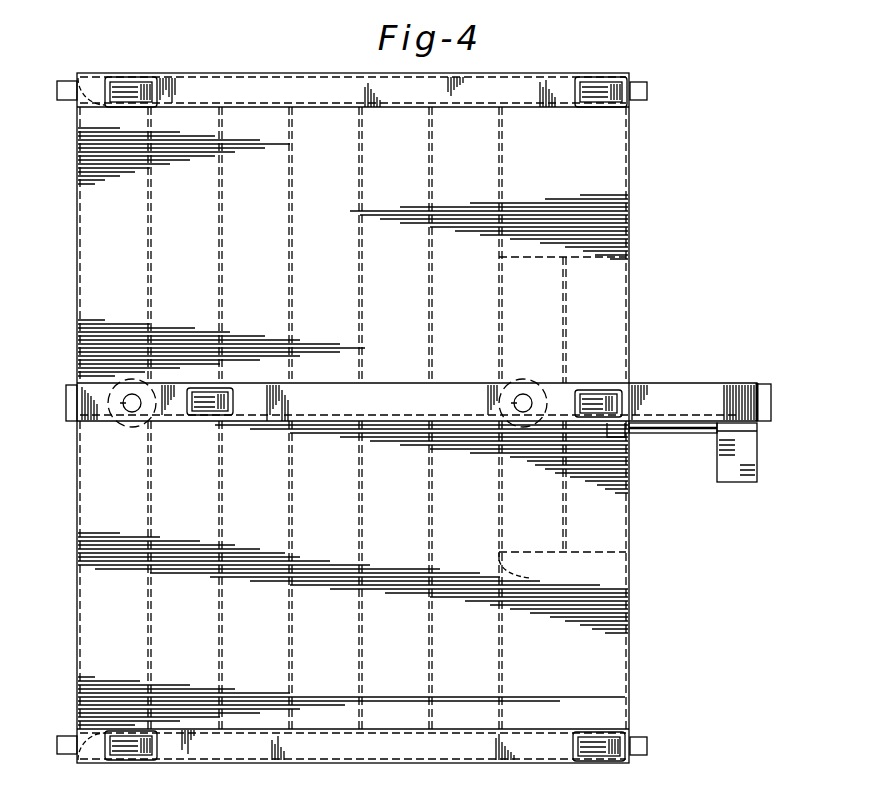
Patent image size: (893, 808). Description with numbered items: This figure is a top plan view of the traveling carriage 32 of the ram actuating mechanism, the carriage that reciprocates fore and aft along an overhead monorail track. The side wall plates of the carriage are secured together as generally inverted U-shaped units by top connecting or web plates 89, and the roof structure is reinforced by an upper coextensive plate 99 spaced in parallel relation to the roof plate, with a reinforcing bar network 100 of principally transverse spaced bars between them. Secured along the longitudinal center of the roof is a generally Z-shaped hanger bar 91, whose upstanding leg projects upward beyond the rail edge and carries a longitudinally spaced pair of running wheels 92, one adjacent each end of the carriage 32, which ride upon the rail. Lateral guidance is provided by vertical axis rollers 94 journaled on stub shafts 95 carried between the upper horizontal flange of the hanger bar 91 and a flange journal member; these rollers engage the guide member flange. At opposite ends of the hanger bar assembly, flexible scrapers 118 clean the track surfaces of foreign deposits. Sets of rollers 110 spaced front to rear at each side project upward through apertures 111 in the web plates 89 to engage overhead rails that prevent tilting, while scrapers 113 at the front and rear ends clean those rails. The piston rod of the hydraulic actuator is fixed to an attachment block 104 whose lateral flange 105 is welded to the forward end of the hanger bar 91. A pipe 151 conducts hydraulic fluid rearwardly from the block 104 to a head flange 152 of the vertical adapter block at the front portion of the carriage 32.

The carriage 32 is at (636, 294).
The top connecting or web plates 89 is at (535, 88).
The hanger bar 91 is at (730, 395).
The running wheels 92 is at (224, 392).
The vertical axis rollers 94 is at (135, 424).
The stub shafts 95 is at (521, 395).
The upper coextensive plate 99 is at (612, 683).
The reinforcing bar network 100 is at (533, 570).
The attachment block 104 is at (742, 482).
The lateral flange 105 is at (752, 437).
The rollers 110 is at (160, 81).
The apertures 111 is at (575, 752).
The scrapers 113 is at (72, 82).
The flexible scrapers 118 is at (70, 386).
The pipe 151 is at (670, 434).
The head flange 152 is at (615, 437).